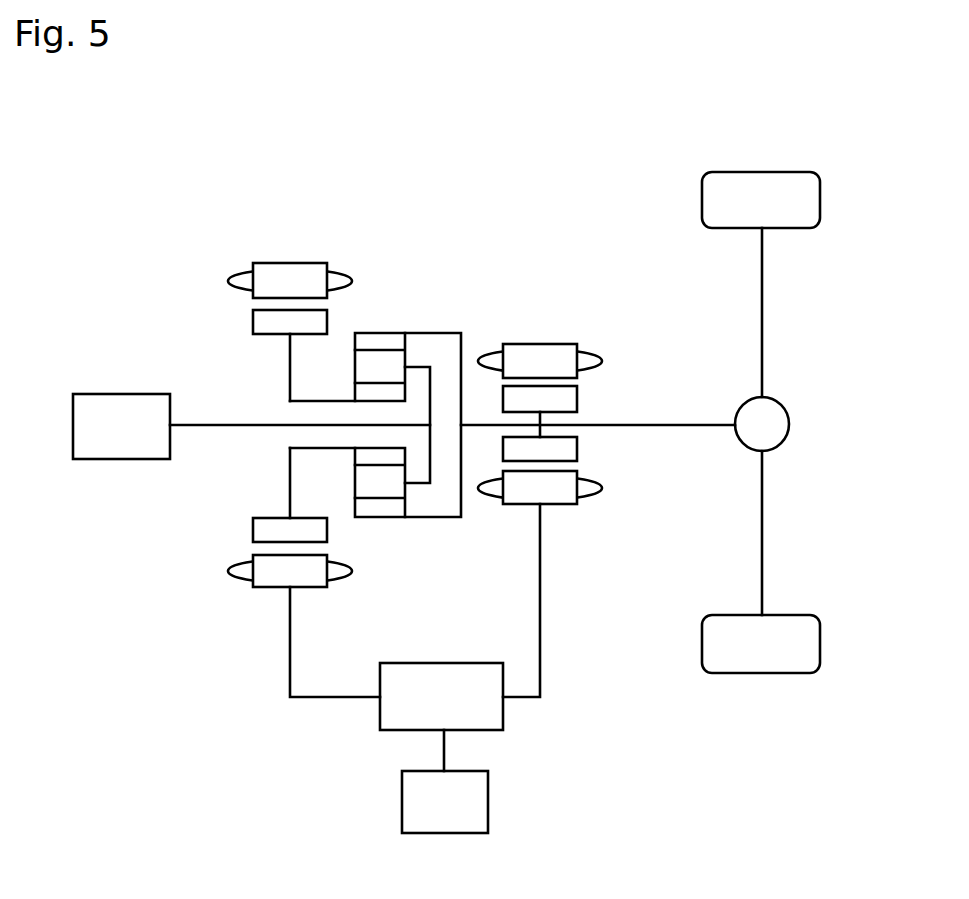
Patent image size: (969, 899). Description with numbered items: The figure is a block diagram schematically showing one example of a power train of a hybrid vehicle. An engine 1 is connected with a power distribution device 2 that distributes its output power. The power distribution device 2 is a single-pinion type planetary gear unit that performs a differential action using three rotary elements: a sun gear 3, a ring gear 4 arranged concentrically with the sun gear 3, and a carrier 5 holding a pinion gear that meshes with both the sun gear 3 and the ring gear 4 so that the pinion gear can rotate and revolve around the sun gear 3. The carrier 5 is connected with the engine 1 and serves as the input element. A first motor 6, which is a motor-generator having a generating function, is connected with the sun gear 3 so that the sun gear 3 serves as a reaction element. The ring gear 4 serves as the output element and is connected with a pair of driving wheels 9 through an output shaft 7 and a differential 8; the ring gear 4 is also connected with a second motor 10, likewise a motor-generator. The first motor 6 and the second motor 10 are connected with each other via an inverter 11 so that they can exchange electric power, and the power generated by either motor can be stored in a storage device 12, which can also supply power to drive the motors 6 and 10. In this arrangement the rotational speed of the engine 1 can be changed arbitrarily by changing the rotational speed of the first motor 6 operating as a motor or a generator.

The engine 1 is at (128, 394).
The power distribution device 2 is at (434, 298).
The sun gear 3 is at (355, 455).
The ring gear 4 is at (386, 333).
The carrier 5 is at (430, 467).
The first motor 6 is at (300, 252).
The output shaft 7 is at (680, 425).
The differential 8 is at (789, 430).
The driving wheels 9 is at (767, 172).
The second motor 10 is at (550, 328).
The inverter 11 is at (442, 663).
The storage device 12 is at (444, 833).